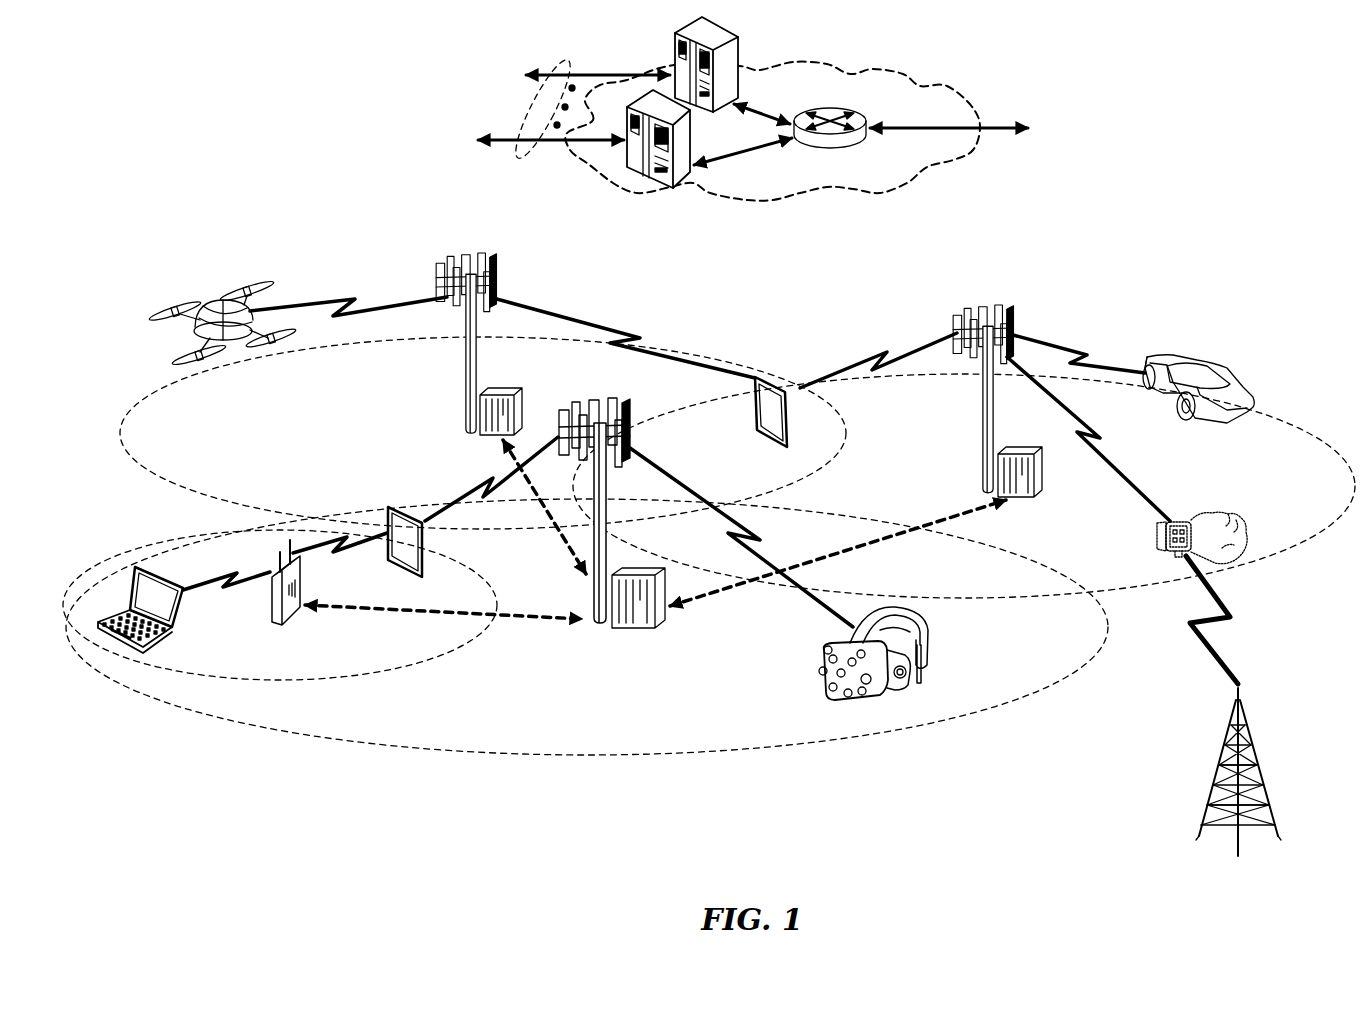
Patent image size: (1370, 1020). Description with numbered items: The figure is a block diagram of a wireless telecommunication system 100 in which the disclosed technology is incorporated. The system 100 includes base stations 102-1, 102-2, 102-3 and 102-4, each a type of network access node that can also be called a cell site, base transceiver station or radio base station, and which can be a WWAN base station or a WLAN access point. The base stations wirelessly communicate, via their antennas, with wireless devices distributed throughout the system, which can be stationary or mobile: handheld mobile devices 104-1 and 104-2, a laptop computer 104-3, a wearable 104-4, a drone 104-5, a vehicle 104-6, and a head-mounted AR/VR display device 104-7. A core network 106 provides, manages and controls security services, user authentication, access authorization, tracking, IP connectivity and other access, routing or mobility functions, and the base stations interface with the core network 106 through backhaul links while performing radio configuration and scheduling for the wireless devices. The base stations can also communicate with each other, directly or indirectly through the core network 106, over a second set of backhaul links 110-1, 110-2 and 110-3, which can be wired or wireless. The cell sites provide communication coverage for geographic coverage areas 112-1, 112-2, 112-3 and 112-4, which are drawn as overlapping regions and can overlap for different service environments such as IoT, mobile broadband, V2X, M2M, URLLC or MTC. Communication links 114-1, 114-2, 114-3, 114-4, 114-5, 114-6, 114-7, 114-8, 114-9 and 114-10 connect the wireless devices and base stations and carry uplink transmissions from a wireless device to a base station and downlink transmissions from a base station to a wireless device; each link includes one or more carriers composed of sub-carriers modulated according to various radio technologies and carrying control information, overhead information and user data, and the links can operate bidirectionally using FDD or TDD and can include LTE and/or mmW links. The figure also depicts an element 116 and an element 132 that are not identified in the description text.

The wireless telecommunication system 100 is at (1272, 118).
The base station 102-1 is at (600, 632).
The base station 102-2 is at (462, 383).
The base station 102-3 is at (980, 418).
The base station 102-4 is at (272, 613).
The wireless device 104-1 is at (425, 543).
The wireless device 104-2 is at (755, 410).
The wireless device 104-3 is at (120, 647).
The wireless device 104-4 is at (1185, 514).
The wireless device 104-5 is at (232, 348).
The wireless device 104-6 is at (1212, 370).
The wireless device 104-7 is at (933, 642).
The core network 106 is at (866, 193).
The backhaul link 110-1 is at (343, 612).
The backhaul link 110-2 is at (903, 533).
The backhaul link 110-3 is at (557, 533).
The geographic coverage area 112-1 is at (528, 757).
The geographic coverage area 112-2 is at (407, 671).
The geographic coverage area 112-3 is at (182, 488).
The geographic coverage area 112-4 is at (1282, 412).
The communication link 114-1 is at (757, 542).
The communication link 114-2 is at (490, 490).
The communication link 114-3 is at (198, 588).
The communication link 114-4 is at (343, 552).
The communication link 114-5 is at (348, 295).
The communication link 114-6 is at (624, 338).
The communication link 114-7 is at (878, 358).
The communication link 114-8 is at (1100, 445).
The communication link 114-9 is at (1078, 357).
The communication link 114-10 is at (1222, 622).
The satellite or broadcast tower 116 is at (1252, 750).
The external network connection 132 is at (536, 152).